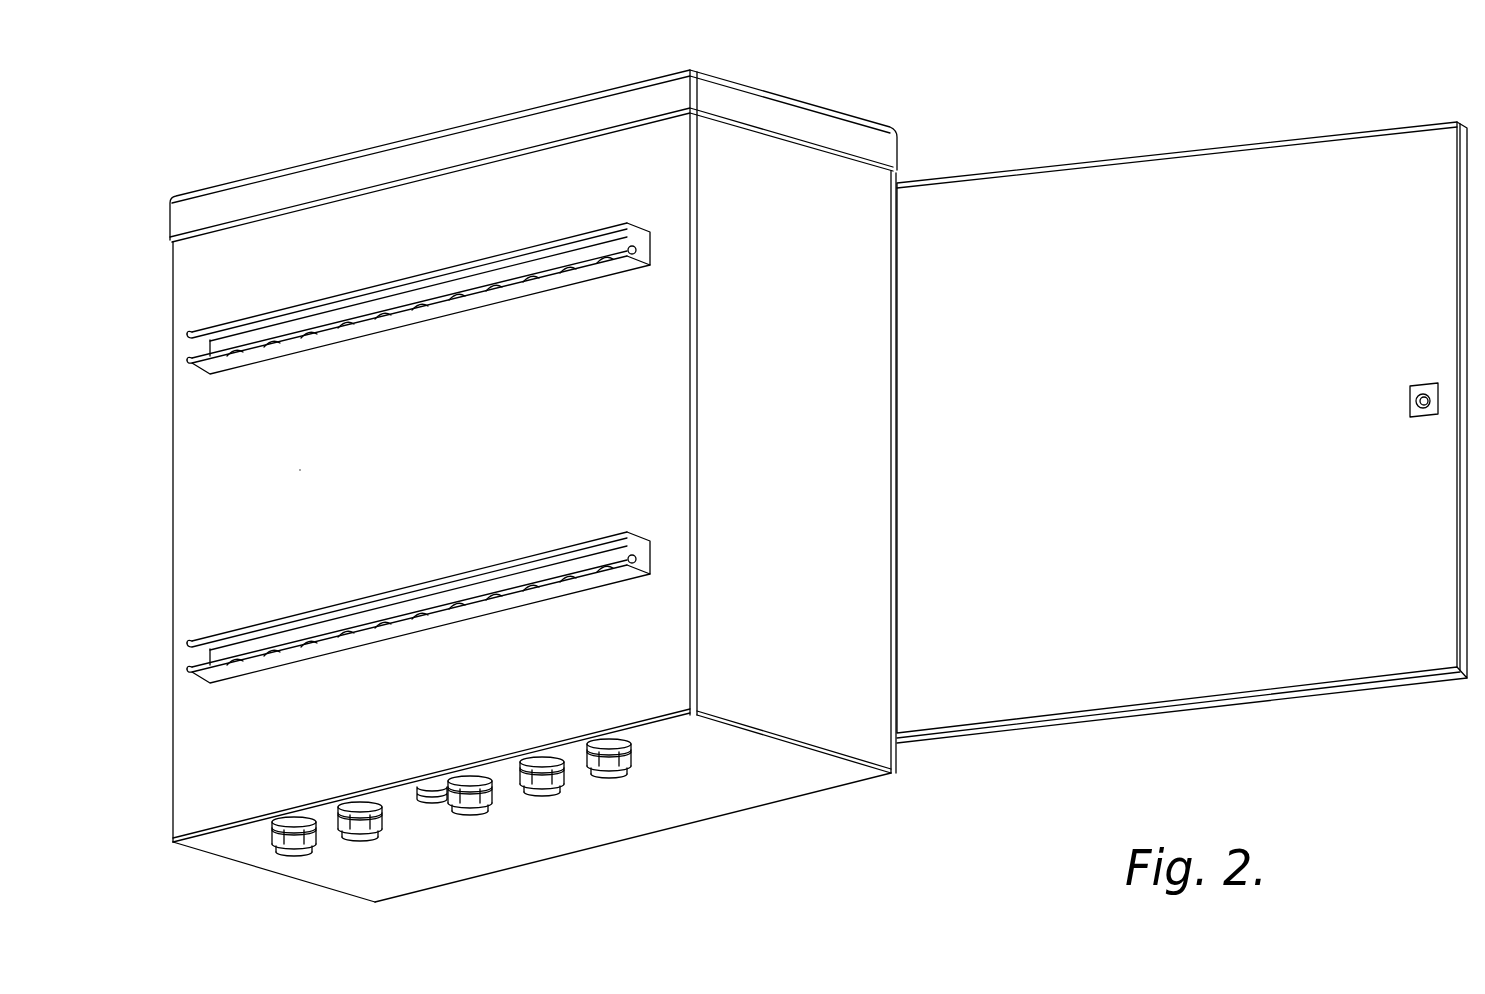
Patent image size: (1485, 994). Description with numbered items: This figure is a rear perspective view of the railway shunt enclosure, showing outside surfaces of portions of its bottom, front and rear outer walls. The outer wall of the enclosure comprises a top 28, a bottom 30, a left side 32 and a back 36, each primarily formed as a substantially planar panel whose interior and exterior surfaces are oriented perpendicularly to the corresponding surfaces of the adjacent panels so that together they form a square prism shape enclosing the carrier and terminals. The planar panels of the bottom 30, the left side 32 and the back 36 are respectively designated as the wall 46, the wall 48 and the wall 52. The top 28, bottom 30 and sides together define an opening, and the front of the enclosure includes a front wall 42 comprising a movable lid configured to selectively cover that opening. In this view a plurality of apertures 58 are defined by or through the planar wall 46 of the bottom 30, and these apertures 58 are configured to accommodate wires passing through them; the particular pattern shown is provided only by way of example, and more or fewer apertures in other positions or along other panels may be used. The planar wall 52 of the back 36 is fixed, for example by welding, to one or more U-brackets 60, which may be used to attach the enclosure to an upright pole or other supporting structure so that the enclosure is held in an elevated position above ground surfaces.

The top 28 is at (748, 82).
The bottom 30 is at (217, 862).
The left side 32 is at (838, 240).
The back 36 is at (242, 429).
The front wall 42 is at (1159, 189).
The planar panel or wall of the bottom 46 is at (767, 775).
The planar panel or wall of the left side 48 is at (855, 723).
The planar panel or wall of the back 52 is at (272, 542).
The apertures 58 is at (352, 822).
The U-brackets 60 is at (607, 268).